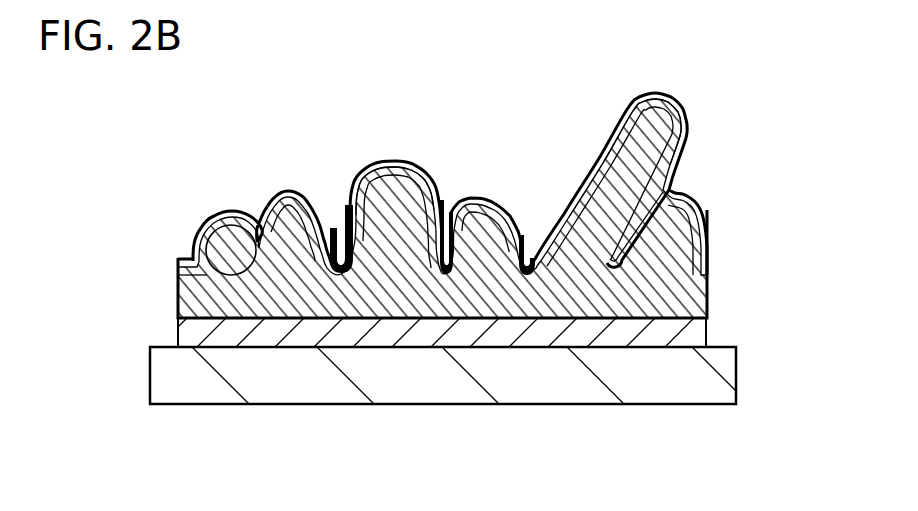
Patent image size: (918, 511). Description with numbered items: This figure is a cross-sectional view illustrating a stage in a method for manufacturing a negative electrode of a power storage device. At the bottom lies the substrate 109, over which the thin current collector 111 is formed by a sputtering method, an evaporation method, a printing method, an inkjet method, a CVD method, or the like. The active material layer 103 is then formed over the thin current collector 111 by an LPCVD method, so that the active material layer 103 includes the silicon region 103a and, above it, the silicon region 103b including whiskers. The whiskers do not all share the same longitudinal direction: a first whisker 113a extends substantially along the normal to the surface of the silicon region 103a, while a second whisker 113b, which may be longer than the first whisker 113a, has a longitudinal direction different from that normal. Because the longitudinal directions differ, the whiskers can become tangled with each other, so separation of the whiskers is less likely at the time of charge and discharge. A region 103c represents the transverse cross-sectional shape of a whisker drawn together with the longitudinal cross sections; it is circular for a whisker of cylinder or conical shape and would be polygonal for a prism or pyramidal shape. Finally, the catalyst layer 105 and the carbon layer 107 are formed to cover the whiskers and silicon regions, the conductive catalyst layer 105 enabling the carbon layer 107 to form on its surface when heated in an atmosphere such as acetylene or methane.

The active material layer 103 is at (167, 175).
The silicon region 103a is at (723, 273).
The silicon region including whiskers 103b is at (723, 108).
The region 103c is at (222, 243).
The catalyst layer 105 is at (627, 133).
The carbon layer 107 is at (285, 190).
The substrate 109 is at (407, 383).
The thin current collector 111 is at (537, 330).
The first whisker 113a is at (380, 210).
The second whisker 113b is at (622, 177).